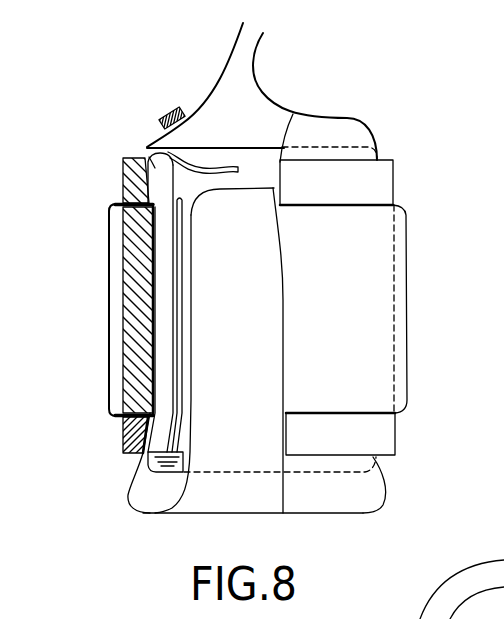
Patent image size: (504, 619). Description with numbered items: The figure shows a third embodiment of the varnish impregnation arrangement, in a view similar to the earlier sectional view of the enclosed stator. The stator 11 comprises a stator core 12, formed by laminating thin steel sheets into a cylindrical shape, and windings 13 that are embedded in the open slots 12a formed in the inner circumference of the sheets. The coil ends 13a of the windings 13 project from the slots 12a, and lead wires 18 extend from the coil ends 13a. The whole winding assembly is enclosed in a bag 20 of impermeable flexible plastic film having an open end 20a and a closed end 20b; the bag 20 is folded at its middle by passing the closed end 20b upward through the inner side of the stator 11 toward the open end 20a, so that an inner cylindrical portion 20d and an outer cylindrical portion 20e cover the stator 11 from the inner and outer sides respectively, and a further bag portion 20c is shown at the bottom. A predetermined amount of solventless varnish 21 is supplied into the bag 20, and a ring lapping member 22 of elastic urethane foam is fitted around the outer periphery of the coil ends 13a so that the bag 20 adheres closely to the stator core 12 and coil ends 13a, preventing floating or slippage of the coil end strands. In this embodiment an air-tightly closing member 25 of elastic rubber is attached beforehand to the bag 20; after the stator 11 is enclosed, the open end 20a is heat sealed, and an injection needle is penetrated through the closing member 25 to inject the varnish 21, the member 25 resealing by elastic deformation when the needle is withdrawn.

The stator 11 is at (303, 132).
The stator core 12 is at (135, 313).
The slots 12a is at (153, 249).
The windings 13 is at (168, 298).
The coil ends 13a is at (145, 148).
The lead wires 18 is at (206, 165).
The bag 20 is at (353, 117).
The open end 20a is at (252, 32).
The closed end 20b is at (248, 188).
The holder bottom 20c is at (129, 501).
The inner cylindrical portion 20d is at (193, 370).
The outer cylindrical portion 20e is at (108, 360).
The varnish 21 is at (138, 494).
The lapping member 22 is at (387, 180).
The air-tightly closing member 25 is at (172, 110).